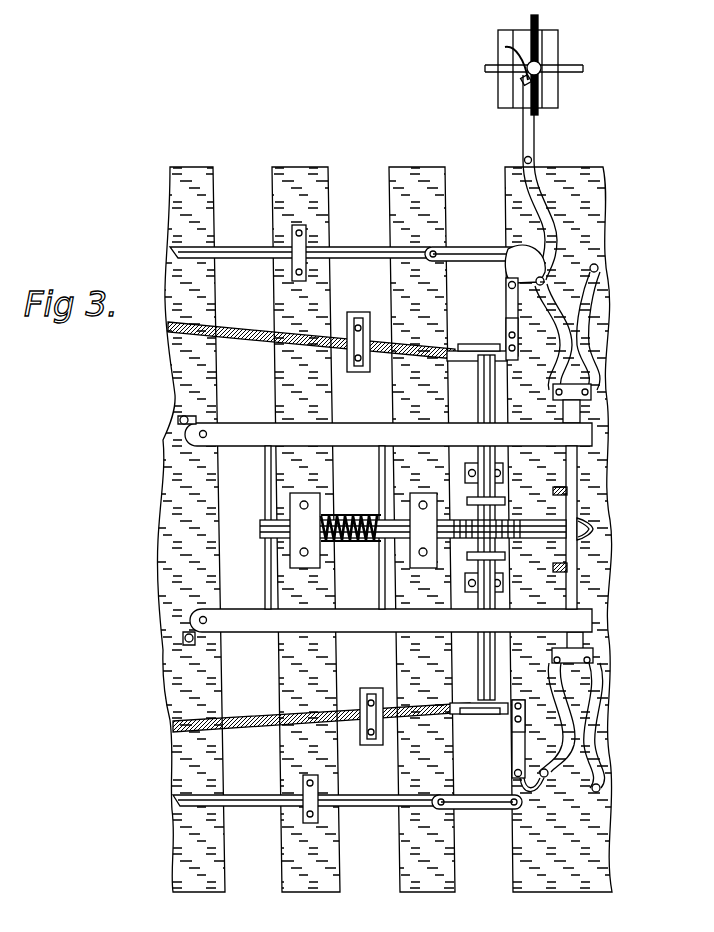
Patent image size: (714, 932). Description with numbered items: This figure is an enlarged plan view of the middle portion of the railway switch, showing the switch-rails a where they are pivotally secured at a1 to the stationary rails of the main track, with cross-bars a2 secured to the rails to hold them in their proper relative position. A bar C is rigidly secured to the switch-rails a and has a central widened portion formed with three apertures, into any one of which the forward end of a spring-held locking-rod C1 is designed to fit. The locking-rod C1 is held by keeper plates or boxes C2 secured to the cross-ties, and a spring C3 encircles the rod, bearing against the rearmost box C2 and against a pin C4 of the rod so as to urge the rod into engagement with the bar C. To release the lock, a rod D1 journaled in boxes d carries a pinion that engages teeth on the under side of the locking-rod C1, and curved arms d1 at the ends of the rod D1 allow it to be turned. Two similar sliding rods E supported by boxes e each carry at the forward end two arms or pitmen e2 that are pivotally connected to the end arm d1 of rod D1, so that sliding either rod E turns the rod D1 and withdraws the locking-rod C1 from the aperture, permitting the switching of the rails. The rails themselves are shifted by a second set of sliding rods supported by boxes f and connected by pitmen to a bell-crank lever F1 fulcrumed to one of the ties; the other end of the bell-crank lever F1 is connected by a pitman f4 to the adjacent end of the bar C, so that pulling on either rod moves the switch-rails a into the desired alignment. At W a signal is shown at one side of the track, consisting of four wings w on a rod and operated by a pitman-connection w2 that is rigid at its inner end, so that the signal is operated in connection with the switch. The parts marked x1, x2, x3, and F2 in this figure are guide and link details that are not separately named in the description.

The signal W is at (506, 69).
The wings w is at (538, 22).
The pitman-connection w2 is at (534, 145).
The bell-crank lever F1 is at (248, 262).
The guide clamp x' x1 is at (306, 244).
The link x2 is at (465, 262).
The pivot bracket x3 is at (505, 290).
The crank lobe F'' F2 is at (515, 268).
The boxes f is at (570, 528).
The pitman f4 is at (552, 275).
The sliding rods E is at (240, 330).
The boxes e is at (356, 372).
The arms or pitmen e2 is at (478, 335).
The curved arms d1 is at (505, 328).
The boxes d is at (468, 575).
The rod D1 is at (482, 665).
The switch-rails a is at (258, 448).
The pivot a1 is at (180, 420).
The cross-bars a2 is at (265, 552).
The bar C is at (570, 595).
The locking-rod C1 is at (535, 530).
The keeper plates or boxes C2 is at (312, 560).
The spring C3 is at (356, 516).
The pin C4 is at (385, 516).